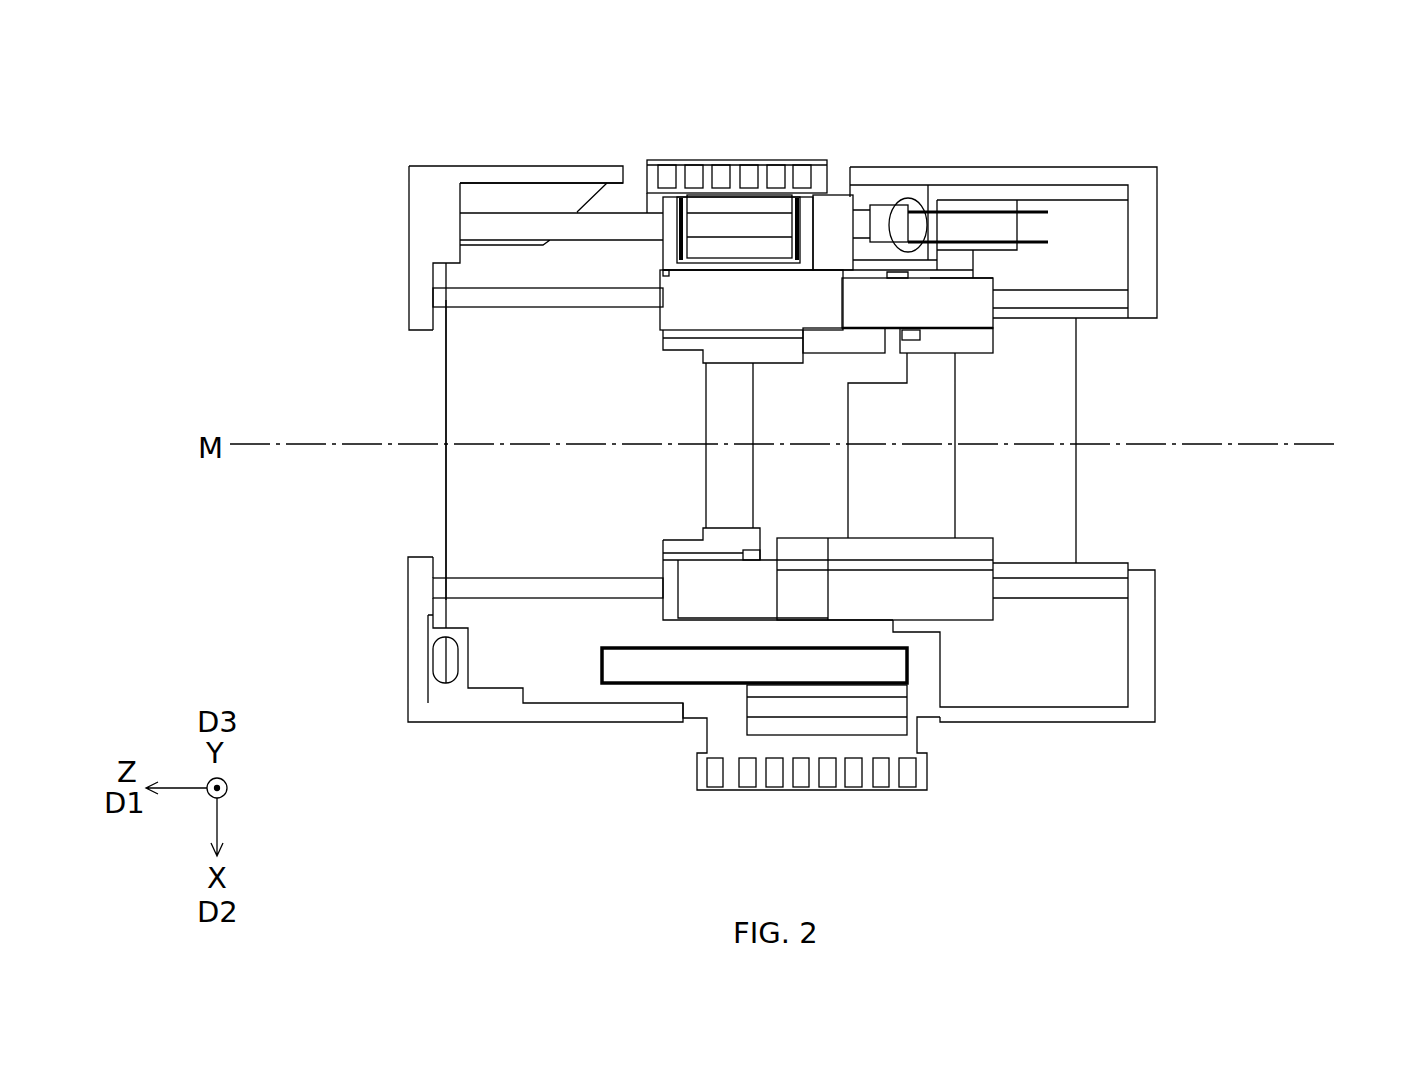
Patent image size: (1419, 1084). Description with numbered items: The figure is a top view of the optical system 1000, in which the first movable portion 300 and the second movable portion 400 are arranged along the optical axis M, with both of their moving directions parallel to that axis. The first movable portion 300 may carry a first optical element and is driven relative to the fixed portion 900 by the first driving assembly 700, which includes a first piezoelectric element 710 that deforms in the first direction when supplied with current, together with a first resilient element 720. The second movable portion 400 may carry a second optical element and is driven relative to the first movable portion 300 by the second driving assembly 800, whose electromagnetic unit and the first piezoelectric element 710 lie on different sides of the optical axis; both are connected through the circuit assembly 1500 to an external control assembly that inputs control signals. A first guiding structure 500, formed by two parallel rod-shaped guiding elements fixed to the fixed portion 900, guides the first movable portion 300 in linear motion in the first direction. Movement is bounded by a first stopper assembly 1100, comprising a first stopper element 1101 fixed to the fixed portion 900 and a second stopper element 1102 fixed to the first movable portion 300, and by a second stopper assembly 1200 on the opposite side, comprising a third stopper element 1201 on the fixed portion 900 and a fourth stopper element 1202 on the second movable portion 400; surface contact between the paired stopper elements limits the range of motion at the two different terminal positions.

The optical system 1000 is at (262, 86).
The first stopper assembly 1100 is at (1330, 58).
The first stopper element 1101 is at (470, 257).
The second stopper element 1102 is at (665, 255).
The second stopper assembly 1200 is at (1330, 160).
The third stopper element 1201 is at (1127, 257).
The fourth stopper element 1202 is at (997, 285).
The fixed portion 900 is at (422, 210).
The first piezoelectric element 710 is at (538, 220).
The first driving assembly 700 is at (736, 188).
The first resilient element 720 is at (765, 225).
The first movable portion 300 is at (687, 315).
The second movable portion 400 is at (972, 313).
The first guiding structure 500 is at (492, 300).
The second driving assembly 800 is at (741, 709).
The circuit assembly 1500 is at (880, 775).